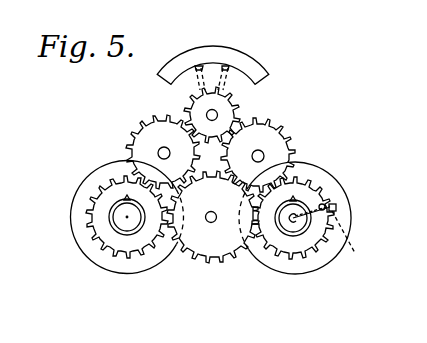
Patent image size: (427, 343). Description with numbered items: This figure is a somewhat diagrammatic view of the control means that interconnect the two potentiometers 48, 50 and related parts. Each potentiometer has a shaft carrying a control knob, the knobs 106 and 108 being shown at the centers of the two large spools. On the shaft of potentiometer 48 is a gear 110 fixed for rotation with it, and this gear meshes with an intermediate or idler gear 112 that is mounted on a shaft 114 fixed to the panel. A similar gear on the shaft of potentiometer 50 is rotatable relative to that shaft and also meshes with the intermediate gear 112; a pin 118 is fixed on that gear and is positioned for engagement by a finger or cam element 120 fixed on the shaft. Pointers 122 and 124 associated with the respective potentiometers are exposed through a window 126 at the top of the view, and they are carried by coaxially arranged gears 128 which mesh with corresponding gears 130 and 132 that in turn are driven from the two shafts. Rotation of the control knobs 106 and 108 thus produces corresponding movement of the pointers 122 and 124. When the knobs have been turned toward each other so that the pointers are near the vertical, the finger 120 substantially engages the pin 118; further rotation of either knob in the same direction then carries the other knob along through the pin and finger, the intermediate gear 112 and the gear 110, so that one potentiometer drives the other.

The potentiometer 48 is at (87, 184).
The potentiometer 50 is at (348, 213).
The control knob 106 is at (123, 228).
The control knob 108 is at (293, 231).
The gear 110 is at (100, 229).
The intermediate or idler gear 112 is at (212, 250).
The shaft 114 is at (211, 211).
The pin 118 is at (325, 203).
The finger or cam element 120 is at (340, 228).
The pointer 122 is at (199, 62).
The pointer 124 is at (225, 64).
The window 126 is at (262, 70).
The gears 128 is at (227, 111).
The gear 130 is at (148, 133).
The gear 132 is at (280, 141).